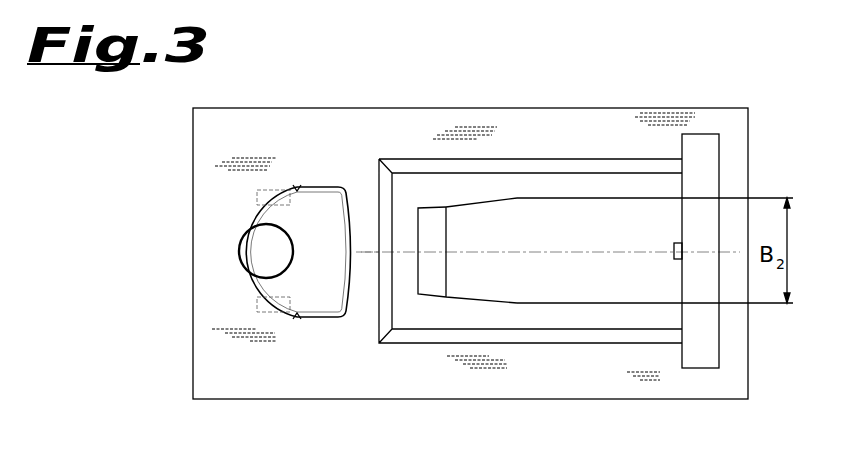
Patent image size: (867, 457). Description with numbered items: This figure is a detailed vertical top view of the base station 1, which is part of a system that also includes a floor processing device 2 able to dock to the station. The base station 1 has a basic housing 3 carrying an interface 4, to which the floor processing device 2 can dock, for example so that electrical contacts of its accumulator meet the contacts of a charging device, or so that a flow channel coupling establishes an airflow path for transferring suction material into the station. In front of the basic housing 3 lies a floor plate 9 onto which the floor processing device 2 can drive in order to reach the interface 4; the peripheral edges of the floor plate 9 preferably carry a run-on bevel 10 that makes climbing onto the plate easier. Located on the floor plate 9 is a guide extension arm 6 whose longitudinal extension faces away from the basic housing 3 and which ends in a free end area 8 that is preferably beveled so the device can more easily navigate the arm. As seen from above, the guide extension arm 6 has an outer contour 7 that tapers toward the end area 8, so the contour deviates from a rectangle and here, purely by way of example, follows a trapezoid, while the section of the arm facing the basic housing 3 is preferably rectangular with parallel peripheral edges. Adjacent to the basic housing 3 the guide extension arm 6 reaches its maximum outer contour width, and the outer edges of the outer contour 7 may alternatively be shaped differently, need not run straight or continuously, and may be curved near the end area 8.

The base station 1 is at (710, 125).
The floor processing device 2 is at (212, 207).
The basic housing 3 is at (702, 158).
The interface 4 is at (674, 243).
The guide extension arm 6 is at (567, 263).
The outer contour 7 is at (608, 200).
The end area 8 is at (372, 213).
The floor plate 9 is at (420, 315).
The run-on bevel 10 is at (433, 232).